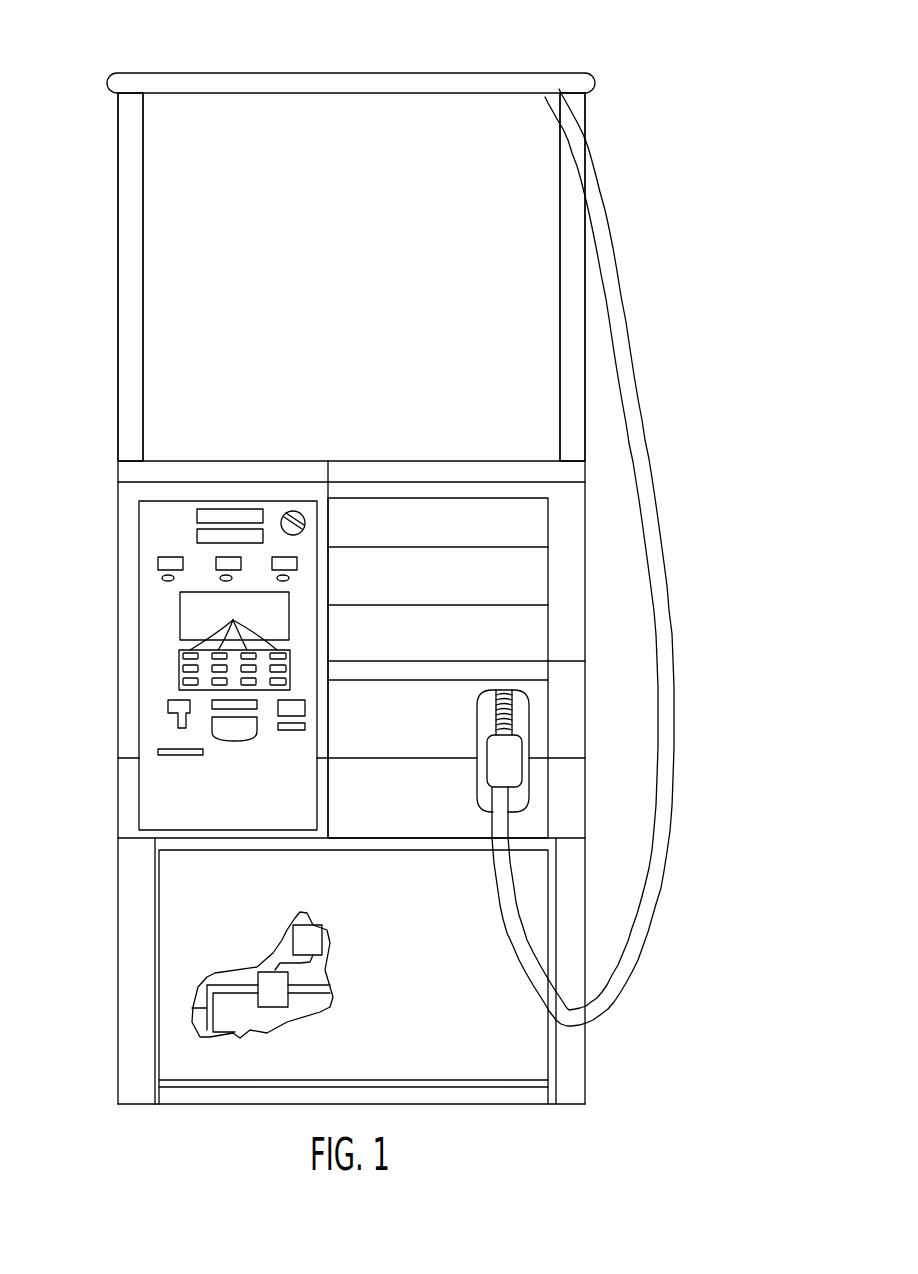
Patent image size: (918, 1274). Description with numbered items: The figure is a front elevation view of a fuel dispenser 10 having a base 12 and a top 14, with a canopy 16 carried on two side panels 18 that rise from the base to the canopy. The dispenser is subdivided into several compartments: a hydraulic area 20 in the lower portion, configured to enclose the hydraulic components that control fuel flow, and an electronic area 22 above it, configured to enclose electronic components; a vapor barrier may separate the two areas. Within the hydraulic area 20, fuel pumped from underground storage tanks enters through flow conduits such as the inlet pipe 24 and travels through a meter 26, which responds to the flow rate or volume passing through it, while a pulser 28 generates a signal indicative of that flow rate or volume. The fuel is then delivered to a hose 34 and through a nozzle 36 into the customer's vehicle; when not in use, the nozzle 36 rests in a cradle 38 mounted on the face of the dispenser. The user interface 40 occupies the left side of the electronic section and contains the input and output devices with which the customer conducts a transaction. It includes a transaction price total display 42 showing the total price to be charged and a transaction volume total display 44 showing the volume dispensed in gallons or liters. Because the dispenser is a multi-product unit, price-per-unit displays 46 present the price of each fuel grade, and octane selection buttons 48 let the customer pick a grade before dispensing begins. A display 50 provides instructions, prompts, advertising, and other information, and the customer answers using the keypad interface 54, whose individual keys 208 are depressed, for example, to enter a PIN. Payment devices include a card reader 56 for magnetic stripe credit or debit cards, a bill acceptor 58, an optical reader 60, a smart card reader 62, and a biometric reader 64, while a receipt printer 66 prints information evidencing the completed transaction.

The fuel dispenser 10 is at (581, 52).
The base 12 is at (478, 1105).
The top 14 is at (345, 461).
The canopy 16 is at (277, 72).
The side panels 18 is at (118, 270).
The hydraulic area 20 is at (527, 1062).
The electronic area 22 is at (452, 531).
The inlet pipe 24 is at (193, 1007).
The meter 26 is at (277, 995).
The pulser 28 is at (305, 940).
The hose 34 is at (665, 660).
The nozzle 36 is at (510, 760).
The cradle 38 is at (523, 800).
The user interface 40 is at (104, 623).
The transaction price total display 42 is at (197, 514).
The transaction volume total display 44 is at (197, 536).
The displays 46 is at (180, 557).
The octane selection buttons 48 is at (174, 578).
The display 50 is at (280, 613).
The keypad interface 54 is at (290, 670).
The card reader 56 is at (168, 708).
The bill acceptor 58 is at (212, 704).
The optical reader 60 is at (250, 720).
The smart card reader 62 is at (305, 708).
The biometric reader 64 is at (305, 726).
The receipt printer 66 is at (168, 750).
The keys 208 is at (183, 682).